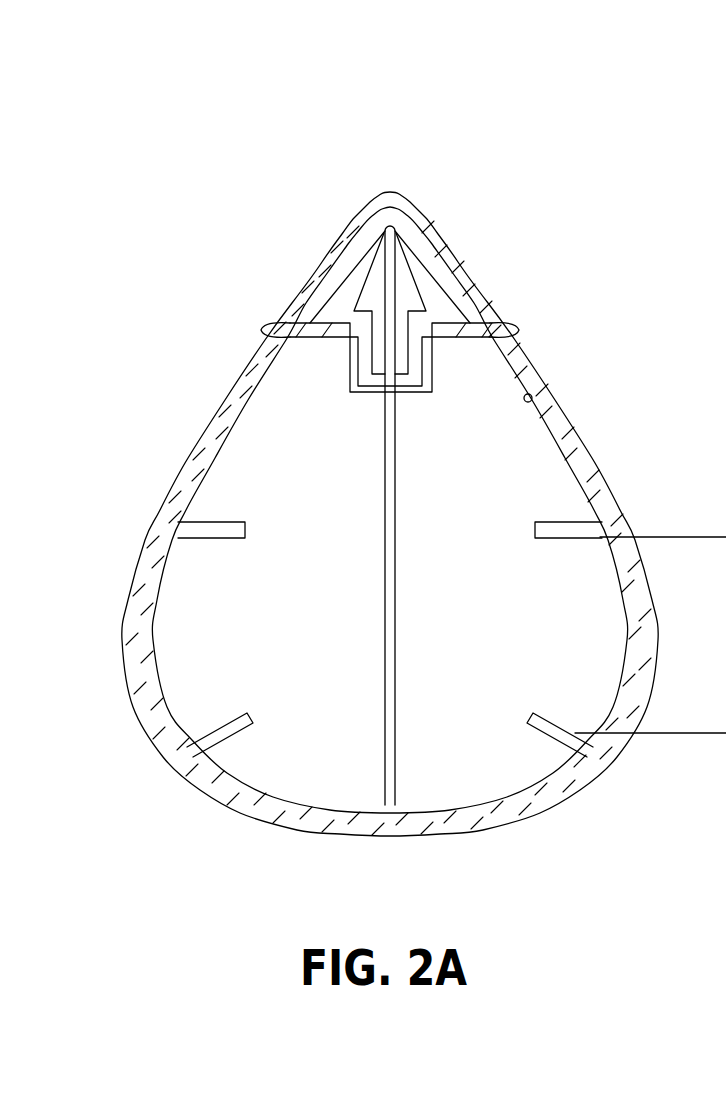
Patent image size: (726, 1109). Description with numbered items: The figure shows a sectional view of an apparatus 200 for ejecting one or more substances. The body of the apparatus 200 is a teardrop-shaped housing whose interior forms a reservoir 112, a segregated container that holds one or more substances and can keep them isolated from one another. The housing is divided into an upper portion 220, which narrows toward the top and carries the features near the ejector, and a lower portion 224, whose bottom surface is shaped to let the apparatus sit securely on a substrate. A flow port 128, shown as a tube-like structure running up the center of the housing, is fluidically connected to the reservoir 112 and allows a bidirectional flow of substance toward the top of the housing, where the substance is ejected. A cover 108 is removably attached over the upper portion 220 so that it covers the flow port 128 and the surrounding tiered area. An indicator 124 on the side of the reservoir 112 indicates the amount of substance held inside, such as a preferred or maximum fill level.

The apparatus 200 is at (409, 516).
The cover 108 is at (362, 224).
The upper portion 220 is at (505, 325).
The indicator 124 is at (575, 423).
The reservoir 112 is at (245, 500).
The flow port 128 is at (385, 478).
The lower portion of the housing 224 is at (460, 707).